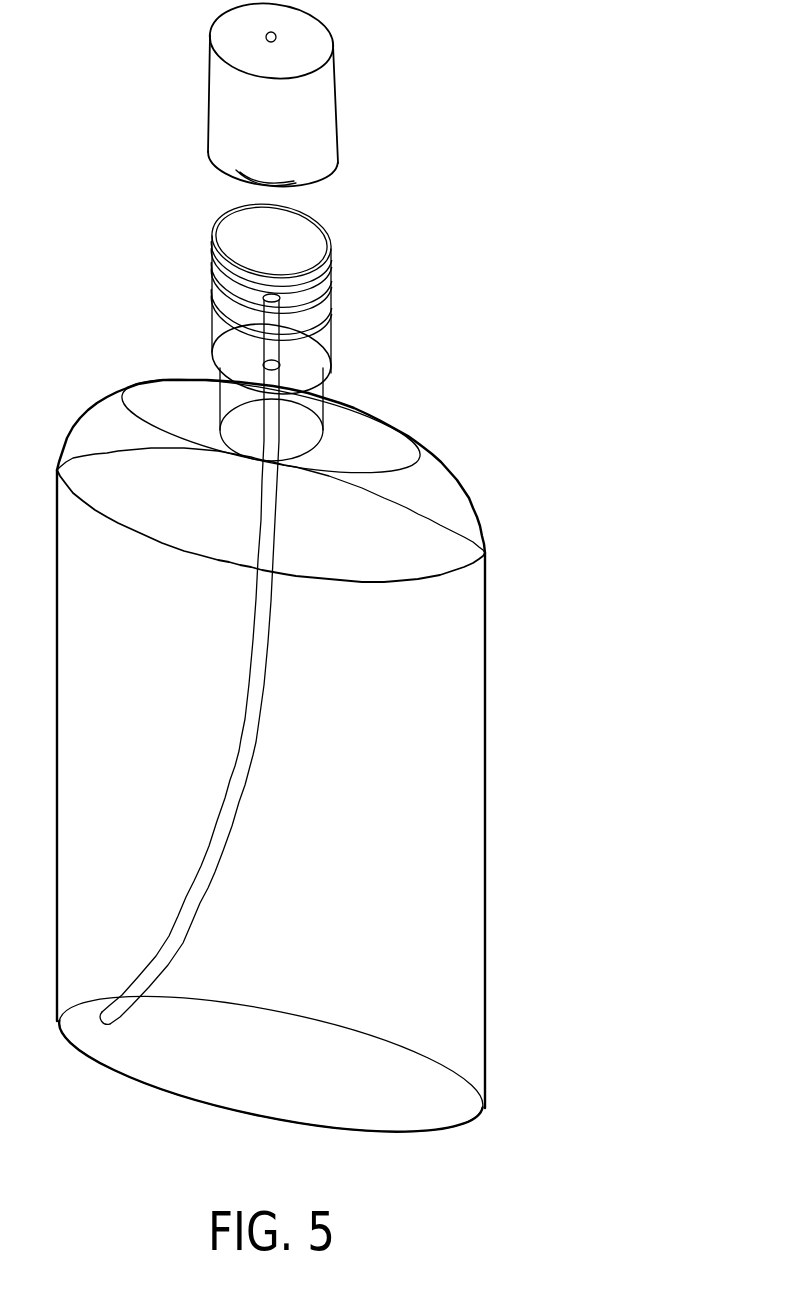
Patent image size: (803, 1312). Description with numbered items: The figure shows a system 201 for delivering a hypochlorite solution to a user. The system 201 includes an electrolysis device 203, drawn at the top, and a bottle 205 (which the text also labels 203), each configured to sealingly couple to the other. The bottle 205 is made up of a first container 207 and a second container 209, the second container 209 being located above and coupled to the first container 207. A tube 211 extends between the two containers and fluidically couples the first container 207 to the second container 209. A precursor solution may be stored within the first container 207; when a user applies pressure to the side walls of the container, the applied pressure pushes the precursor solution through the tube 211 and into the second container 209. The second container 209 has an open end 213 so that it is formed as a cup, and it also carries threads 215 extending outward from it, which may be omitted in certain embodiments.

The system 201 is at (578, 190).
The electrolysis device 203 is at (338, 100).
The bottle shoulder 205 is at (478, 518).
The first container 207 is at (427, 710).
The second container 209 is at (327, 340).
The tube 211 is at (321, 433).
The open end 213 is at (307, 242).
The threads 215 is at (333, 290).